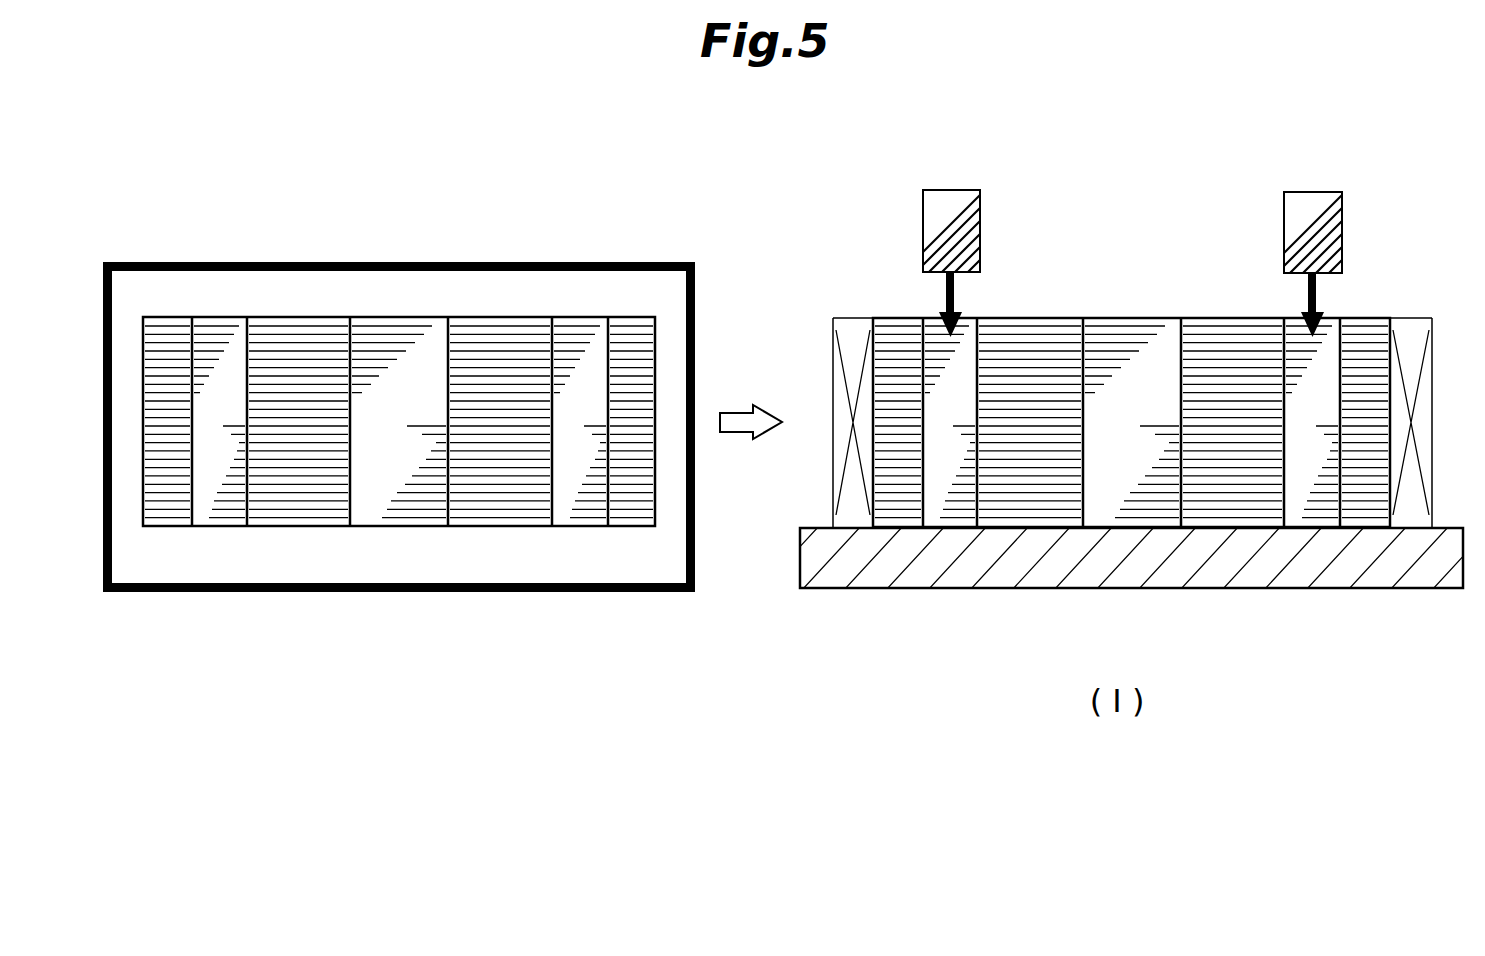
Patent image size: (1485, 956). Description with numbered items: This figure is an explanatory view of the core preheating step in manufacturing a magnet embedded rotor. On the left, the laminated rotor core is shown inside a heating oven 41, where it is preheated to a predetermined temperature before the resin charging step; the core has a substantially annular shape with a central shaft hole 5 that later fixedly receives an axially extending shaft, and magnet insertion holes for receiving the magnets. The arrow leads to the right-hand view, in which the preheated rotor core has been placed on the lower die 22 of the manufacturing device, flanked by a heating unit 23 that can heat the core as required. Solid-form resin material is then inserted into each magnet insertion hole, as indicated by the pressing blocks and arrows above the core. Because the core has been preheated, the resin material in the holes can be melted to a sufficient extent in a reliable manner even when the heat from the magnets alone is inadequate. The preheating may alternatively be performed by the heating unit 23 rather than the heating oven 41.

The shaft hole 5 is at (1088, 380).
The lower die 22 is at (1210, 570).
The heating unit 23 is at (833, 377).
The heating oven 41 is at (518, 262).